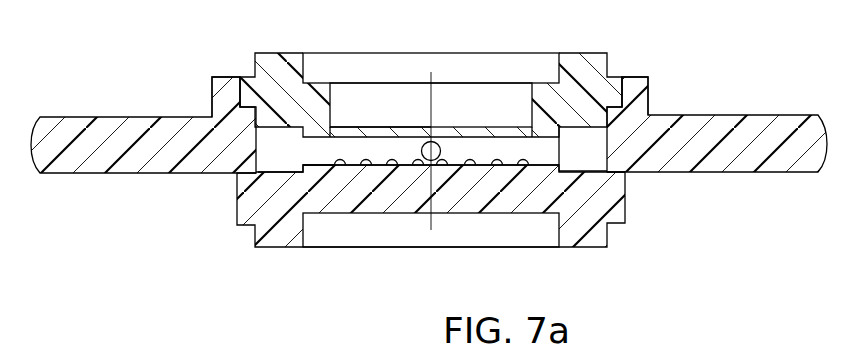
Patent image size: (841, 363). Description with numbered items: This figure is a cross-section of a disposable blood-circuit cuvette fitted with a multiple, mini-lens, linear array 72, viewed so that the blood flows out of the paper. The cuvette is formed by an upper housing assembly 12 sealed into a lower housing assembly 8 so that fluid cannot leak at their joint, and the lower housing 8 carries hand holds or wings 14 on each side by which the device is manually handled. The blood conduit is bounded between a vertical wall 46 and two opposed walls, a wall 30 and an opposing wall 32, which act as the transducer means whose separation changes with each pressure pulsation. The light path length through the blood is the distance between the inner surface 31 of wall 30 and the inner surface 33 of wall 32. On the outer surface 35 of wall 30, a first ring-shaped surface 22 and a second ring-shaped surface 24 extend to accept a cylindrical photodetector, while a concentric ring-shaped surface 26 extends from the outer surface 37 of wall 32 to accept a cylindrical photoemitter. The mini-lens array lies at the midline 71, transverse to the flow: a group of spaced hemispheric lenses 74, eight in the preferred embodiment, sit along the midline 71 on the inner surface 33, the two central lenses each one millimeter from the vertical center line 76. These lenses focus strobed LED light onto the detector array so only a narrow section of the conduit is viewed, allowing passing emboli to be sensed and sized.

The lower housing assembly 8 is at (277, 238).
The upper housing assembly 12 is at (278, 52).
The hand holds or wings 14 is at (135, 127).
The first ring-shaped surface 22 is at (545, 82).
The second ring-shaped surface 24 is at (583, 53).
The ring-shaped surface 26 is at (578, 248).
The wall 30 is at (513, 126).
The inner surface of separation wall 30 31 is at (405, 135).
The opposing wall 32 is at (410, 208).
The inner surface of separation wall 32 33 is at (606, 168).
The outer surface of opposed wall 30 35 is at (354, 125).
The outer surface of opposing wall 32 37 is at (488, 216).
The vertical wall 46 is at (256, 127).
The midline 71 is at (623, 174).
The multiple mini-lens linear array 72 is at (316, 157).
The hemispheric lenses 74 is at (391, 160).
The vertical center line 76 is at (432, 72).